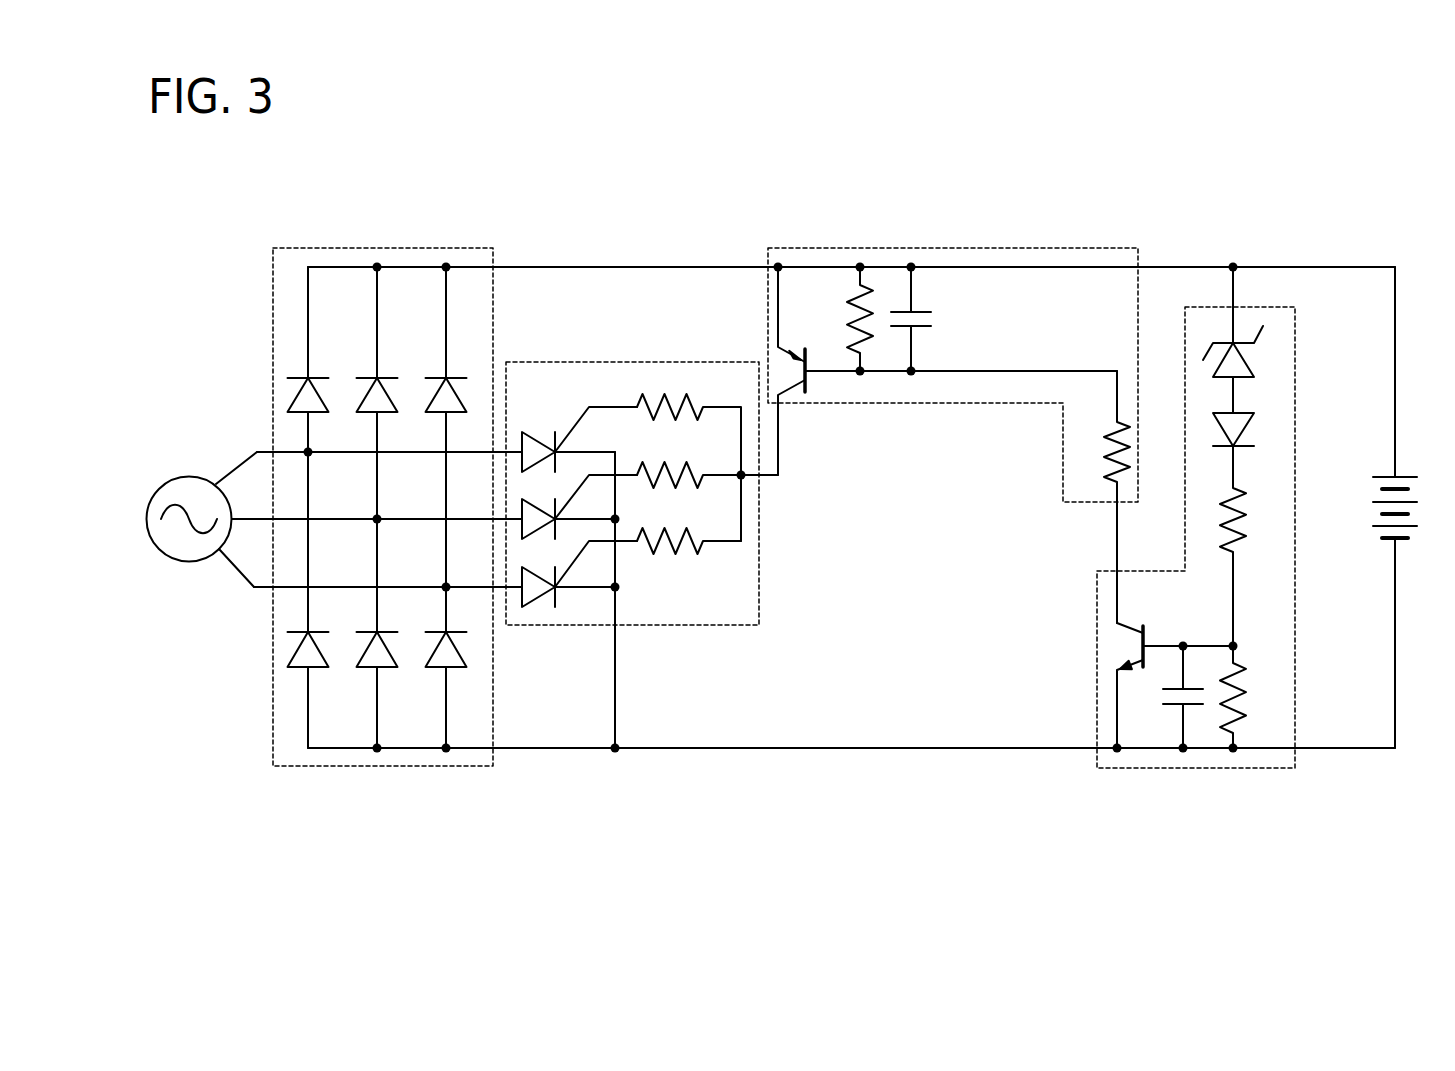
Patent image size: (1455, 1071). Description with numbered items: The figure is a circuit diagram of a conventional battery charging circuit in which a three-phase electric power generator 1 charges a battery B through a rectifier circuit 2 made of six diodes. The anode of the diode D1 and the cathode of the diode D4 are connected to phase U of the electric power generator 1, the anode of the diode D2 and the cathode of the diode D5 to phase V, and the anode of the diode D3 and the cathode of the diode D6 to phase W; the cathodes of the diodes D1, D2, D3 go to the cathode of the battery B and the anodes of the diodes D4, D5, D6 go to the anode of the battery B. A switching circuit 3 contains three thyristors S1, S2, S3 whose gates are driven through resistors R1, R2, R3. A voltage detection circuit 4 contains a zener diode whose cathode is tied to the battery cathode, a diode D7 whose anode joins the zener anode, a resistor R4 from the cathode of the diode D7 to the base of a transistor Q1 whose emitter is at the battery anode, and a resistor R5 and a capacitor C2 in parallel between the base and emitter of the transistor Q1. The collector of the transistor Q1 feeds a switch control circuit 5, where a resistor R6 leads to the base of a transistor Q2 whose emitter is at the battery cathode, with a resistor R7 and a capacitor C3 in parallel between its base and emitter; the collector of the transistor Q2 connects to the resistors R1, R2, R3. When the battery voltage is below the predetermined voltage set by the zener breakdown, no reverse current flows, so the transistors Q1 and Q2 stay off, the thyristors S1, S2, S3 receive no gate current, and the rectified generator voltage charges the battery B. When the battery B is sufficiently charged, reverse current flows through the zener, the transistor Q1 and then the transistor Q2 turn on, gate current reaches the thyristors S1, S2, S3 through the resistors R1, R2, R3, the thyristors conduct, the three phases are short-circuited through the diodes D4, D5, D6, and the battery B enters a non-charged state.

The electric power generator 1 is at (190, 473).
The rectifier circuit 2 is at (382, 248).
The switching circuit 3 is at (634, 362).
The voltage detection circuit 4 is at (1295, 682).
The switch control circuit 5 is at (953, 248).
The battery B is at (1405, 477).
The diode D1 is at (323, 401).
The diode D2 is at (392, 401).
The diode D3 is at (461, 401).
The diode D4 is at (325, 655).
The diode D5 is at (394, 655).
The diode D6 is at (463, 655).
The diode D7 is at (1245, 356).
The thyristor S1 is at (532, 438).
The thyristor S2 is at (521, 508).
The thyristor S3 is at (535, 600).
The resistor R1 is at (689, 467).
The resistor R2 is at (707, 491).
The resistor R3 is at (689, 557).
The resistor R4 is at (1250, 546).
The resistor R5 is at (1250, 697).
The resistor R6 is at (1100, 497).
The resistor R7 is at (843, 319).
The capacitor C2 is at (1165, 697).
The capacitor C3 is at (928, 319).
The transistor Q1 is at (1115, 644).
The transistor Q2 is at (782, 363).